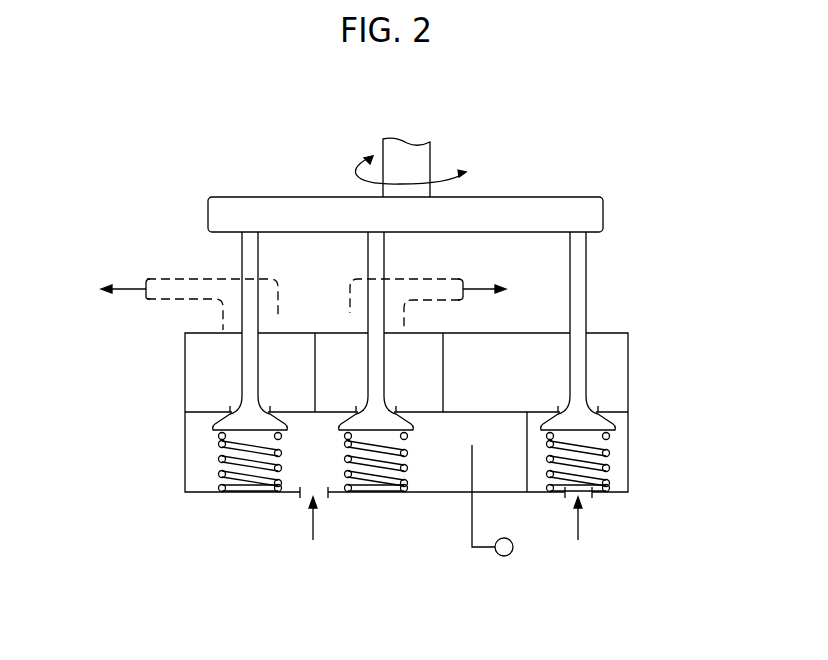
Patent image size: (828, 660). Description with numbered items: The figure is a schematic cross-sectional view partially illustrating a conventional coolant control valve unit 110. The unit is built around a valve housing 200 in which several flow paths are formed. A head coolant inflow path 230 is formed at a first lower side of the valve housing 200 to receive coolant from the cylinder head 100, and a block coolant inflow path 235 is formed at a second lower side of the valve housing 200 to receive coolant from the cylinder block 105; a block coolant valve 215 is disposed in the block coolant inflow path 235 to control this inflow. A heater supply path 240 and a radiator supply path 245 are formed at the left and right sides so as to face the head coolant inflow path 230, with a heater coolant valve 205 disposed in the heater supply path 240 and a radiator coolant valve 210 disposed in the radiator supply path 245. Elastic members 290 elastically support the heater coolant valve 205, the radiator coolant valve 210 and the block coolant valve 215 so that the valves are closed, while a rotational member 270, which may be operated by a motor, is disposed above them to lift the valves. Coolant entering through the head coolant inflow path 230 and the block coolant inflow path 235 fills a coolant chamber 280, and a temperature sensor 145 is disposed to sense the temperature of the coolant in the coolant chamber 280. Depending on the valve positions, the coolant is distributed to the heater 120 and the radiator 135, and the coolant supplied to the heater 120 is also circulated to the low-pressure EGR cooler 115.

The coolant control valve unit 110 is at (397, 92).
The rotational member 270 is at (604, 216).
The valve housing 200 is at (628, 351).
The heater coolant valve 205 is at (252, 238).
The radiator coolant valve 210 is at (368, 248).
The block coolant valve 215 is at (587, 259).
The low-pressure EGR cooler 115 is at (171, 288).
The heater 120 is at (105, 291).
The radiator 135 is at (446, 302).
The radiator supply path 245 is at (363, 405).
The heater supply path 240 is at (237, 409).
The block coolant inflow path 235 is at (589, 406).
The elastic members 290 is at (222, 496).
The cylinder head 100 is at (313, 534).
The cylinder block 105 is at (581, 534).
The head coolant inflow path 230 is at (330, 496).
The coolant chamber 280 is at (457, 478).
The temperature sensor 145 is at (504, 556).